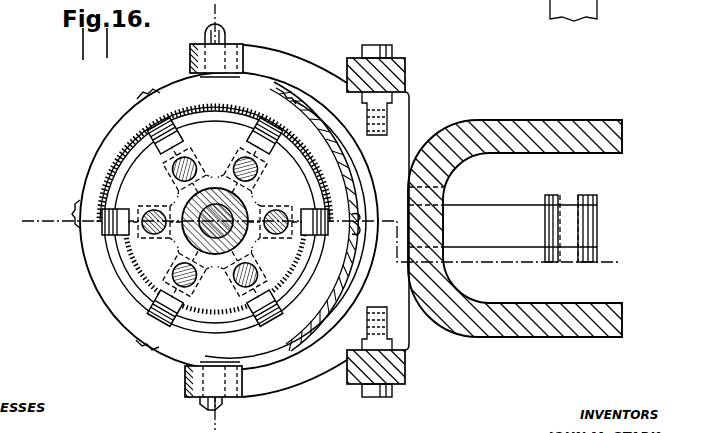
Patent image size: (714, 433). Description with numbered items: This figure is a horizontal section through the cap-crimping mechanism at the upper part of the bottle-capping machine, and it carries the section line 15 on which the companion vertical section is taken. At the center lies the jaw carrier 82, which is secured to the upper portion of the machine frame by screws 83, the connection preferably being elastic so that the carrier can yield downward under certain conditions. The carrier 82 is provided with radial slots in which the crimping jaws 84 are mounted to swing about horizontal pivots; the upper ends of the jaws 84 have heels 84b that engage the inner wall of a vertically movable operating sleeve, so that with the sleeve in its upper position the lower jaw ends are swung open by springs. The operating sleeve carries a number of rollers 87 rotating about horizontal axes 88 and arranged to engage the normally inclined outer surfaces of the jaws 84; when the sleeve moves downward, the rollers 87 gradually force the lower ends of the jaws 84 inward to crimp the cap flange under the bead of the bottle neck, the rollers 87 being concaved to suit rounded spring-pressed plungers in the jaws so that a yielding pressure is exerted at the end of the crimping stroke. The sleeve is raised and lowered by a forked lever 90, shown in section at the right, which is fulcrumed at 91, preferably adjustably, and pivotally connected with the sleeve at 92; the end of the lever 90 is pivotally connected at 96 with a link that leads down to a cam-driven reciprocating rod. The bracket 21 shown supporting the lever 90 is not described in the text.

The section line 15 is at (322, 217).
The supporting bracket 21 is at (493, 120).
The jaw carrier 82 is at (199, 213).
The screws 83 is at (215, 222).
The crimping jaws 84 is at (215, 222).
The heels 84b is at (151, 236).
The rollers 87 is at (148, 96).
The horizontal axes 88 is at (360, 239).
The forked lever 90 is at (283, 60).
The fulcrum 91 is at (392, 49).
The pivotal connection 92 is at (215, 30).
The pivotal connection 96 is at (571, 196).